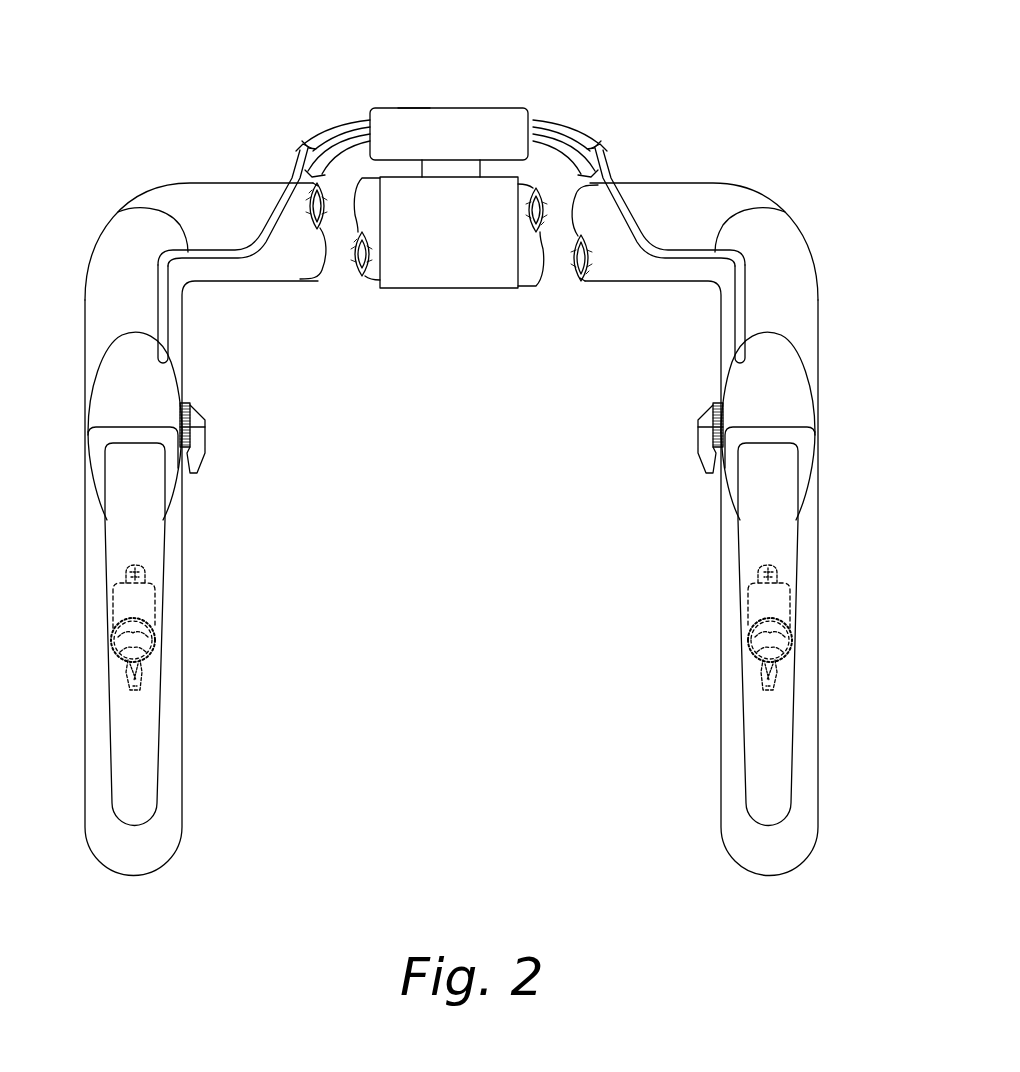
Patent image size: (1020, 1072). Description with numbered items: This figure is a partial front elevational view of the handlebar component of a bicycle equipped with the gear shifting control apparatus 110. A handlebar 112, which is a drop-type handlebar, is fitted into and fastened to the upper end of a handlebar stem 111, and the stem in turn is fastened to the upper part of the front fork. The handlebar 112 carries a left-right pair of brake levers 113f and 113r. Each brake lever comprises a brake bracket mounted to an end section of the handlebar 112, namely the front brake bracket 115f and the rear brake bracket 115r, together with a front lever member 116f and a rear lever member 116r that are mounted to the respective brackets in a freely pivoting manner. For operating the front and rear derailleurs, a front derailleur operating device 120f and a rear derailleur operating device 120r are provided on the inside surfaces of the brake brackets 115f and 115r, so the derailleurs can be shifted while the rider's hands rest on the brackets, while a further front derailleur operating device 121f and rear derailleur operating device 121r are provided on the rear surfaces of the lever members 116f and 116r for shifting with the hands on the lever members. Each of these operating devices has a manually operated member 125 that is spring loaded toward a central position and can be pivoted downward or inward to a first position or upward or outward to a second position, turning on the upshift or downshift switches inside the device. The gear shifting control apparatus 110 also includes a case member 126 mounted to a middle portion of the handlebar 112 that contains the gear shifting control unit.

The gear shifting control apparatus 110 is at (502, 107).
The handlebar stem 111 is at (478, 278).
The handlebar 112 is at (718, 203).
The rear brake lever 113r is at (205, 563).
The front brake lever 113f is at (685, 563).
The rear brake bracket 115r is at (155, 378).
The front brake bracket 115f is at (743, 390).
The rear lever member 116r is at (143, 542).
The front lever member 116f is at (757, 540).
The rear derailleur operating device 120r is at (203, 432).
The front derailleur operating device 120f is at (695, 437).
The rear derailleur operating device 121r is at (160, 623).
The front derailleur operating device 121f is at (743, 628).
The manually operated member 125 is at (200, 463).
The case member 126 is at (413, 107).